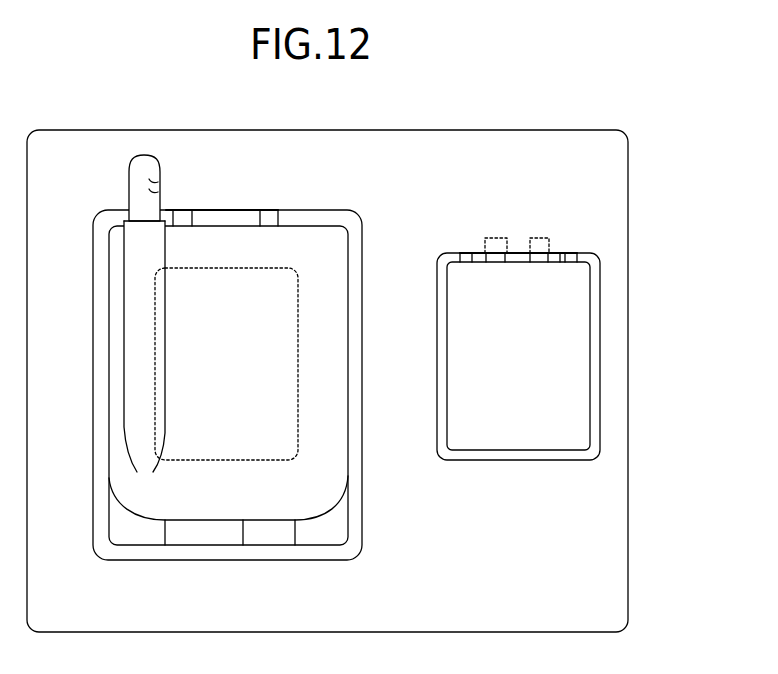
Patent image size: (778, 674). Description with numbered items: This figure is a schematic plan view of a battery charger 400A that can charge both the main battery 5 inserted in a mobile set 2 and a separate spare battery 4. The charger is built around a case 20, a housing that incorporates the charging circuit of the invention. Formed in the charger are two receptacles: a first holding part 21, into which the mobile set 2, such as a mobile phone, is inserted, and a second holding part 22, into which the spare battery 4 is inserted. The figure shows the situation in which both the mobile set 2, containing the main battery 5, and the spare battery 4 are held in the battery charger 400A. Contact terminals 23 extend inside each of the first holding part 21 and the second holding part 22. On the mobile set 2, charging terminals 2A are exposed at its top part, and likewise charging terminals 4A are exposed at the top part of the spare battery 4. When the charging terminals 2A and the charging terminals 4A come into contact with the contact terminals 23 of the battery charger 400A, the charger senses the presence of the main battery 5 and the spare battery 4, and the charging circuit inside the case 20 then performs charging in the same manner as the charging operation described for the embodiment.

The battery charger 400A is at (607, 109).
The case 20 is at (628, 218).
The first holding part 21 is at (362, 513).
The second holding part 22 is at (550, 460).
The contact terminals 23 is at (272, 209).
The mobile set 2 is at (228, 346).
The charging terminals 2A is at (267, 227).
The main battery 5 is at (298, 358).
The spare battery 4 is at (534, 313).
The charging terminals 4A is at (518, 282).